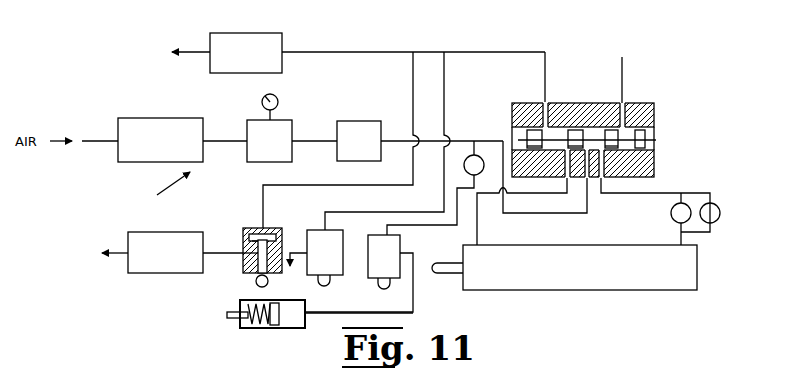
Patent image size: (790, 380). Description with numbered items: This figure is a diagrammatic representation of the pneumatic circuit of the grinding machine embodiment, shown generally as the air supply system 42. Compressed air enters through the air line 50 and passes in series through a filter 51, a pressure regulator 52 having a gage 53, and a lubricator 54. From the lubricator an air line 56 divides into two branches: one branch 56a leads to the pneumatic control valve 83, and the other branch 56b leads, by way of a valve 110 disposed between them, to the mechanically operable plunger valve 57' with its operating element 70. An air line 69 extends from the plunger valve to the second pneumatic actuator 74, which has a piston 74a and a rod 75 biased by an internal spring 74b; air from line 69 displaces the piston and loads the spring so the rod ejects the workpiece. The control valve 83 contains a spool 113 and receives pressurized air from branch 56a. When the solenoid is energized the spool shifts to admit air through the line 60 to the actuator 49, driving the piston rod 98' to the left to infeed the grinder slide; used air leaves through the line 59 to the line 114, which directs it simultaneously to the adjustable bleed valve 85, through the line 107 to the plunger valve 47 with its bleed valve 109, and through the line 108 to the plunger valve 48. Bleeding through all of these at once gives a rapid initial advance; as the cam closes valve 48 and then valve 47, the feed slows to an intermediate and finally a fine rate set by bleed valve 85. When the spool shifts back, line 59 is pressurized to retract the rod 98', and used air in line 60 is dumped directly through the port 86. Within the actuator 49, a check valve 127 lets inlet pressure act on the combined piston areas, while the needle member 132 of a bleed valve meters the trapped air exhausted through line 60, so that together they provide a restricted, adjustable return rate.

The air supply system 42 is at (161, 190).
The plunger valve 47 is at (244, 232).
The plunger valve 48 is at (313, 237).
The actuator 49 is at (573, 292).
The air line 50 is at (98, 141).
The filter 51 is at (172, 126).
The pressure regulator 52 is at (251, 125).
The gage 53 is at (279, 103).
The lubricator 54 is at (358, 124).
The air line 56 is at (398, 138).
The branch 56a is at (549, 213).
The branch 56b is at (463, 150).
The plunger valve 57' is at (374, 248).
The line 59 is at (478, 226).
The line 60 is at (673, 193).
The air line 69 is at (413, 296).
The valve actuator 70 is at (380, 286).
The second pneumatic actuator 74 is at (292, 328).
The piston 74a is at (273, 328).
The internal spring 74b is at (250, 301).
The rod 75 is at (232, 322).
The pneumatic control valve 83 is at (582, 103).
The bleed valve 85 is at (283, 43).
The port 86 is at (625, 92).
The piston rod 98' is at (459, 295).
The line 107 is at (360, 185).
The line 108 is at (381, 210).
The bleed valve 109 is at (145, 273).
The valve 110 is at (484, 152).
The spool 113 is at (656, 140).
The line 114 is at (507, 52).
The check valve 127 is at (670, 215).
The needle member 132 is at (722, 213).